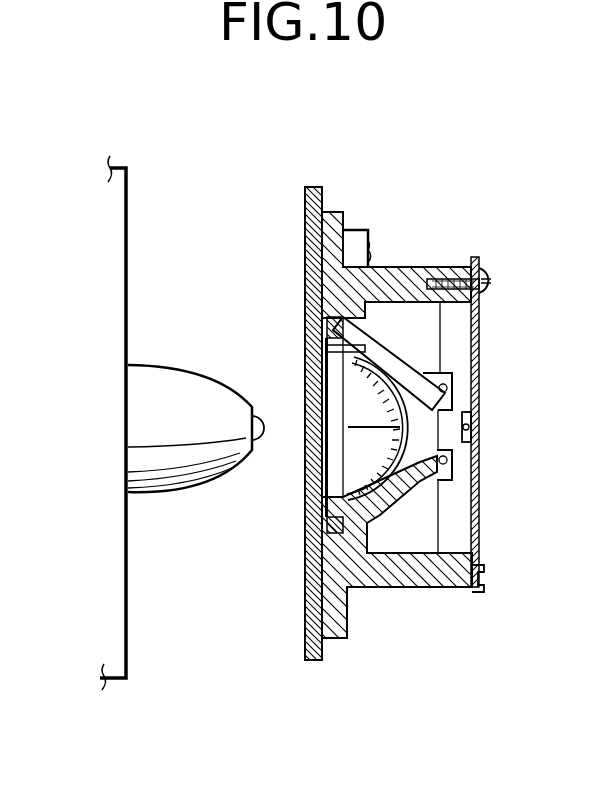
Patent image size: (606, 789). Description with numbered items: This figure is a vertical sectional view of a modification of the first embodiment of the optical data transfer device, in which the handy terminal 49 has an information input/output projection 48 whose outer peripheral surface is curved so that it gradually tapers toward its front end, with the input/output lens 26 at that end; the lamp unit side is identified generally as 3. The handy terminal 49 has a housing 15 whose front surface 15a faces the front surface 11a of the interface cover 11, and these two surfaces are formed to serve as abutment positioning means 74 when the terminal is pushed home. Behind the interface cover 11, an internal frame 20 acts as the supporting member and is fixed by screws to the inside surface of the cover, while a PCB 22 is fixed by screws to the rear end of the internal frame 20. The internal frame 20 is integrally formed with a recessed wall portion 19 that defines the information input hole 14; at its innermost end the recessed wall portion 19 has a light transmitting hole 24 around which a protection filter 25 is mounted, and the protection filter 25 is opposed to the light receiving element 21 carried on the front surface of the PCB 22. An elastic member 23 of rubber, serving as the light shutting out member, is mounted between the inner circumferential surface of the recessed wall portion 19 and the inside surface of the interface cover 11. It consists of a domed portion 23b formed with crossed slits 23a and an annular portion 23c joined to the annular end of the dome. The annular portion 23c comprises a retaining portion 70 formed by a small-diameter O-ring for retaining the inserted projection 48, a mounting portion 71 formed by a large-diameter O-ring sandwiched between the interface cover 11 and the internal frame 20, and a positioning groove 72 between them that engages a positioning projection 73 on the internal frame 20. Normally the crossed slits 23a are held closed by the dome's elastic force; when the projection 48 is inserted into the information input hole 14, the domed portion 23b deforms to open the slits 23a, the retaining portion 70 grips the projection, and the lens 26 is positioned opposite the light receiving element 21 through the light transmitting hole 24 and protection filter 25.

The lamp unit 3 is at (310, 188).
The interface cover 11 is at (318, 662).
The front surface of the interface cover 11a is at (305, 603).
The information input hole 14 is at (357, 452).
The housing 15 is at (112, 682).
The front surface of the housing 15a is at (128, 613).
The recessed wall portion 19 is at (418, 274).
The internal frame 20 is at (330, 214).
The light receiving element 21 is at (469, 430).
The PCB 22 is at (477, 313).
The elastic member 23 is at (382, 530).
The crossed slits 23a is at (447, 583).
The domed portion 23b is at (416, 530).
The annular portion 23c is at (322, 494).
The light transmitting hole 24 is at (455, 403).
The protection filter 25 is at (449, 458).
The input/output lens 26 is at (262, 418).
The information input/output projection 48 is at (189, 447).
The handy terminal 49 is at (114, 166).
The retaining portion 70 is at (324, 348).
The mounting portion 71 is at (326, 316).
The positioning groove 72 is at (322, 322).
The positioning projection 73 is at (382, 340).
The abutment positioning means 74 is at (128, 583).